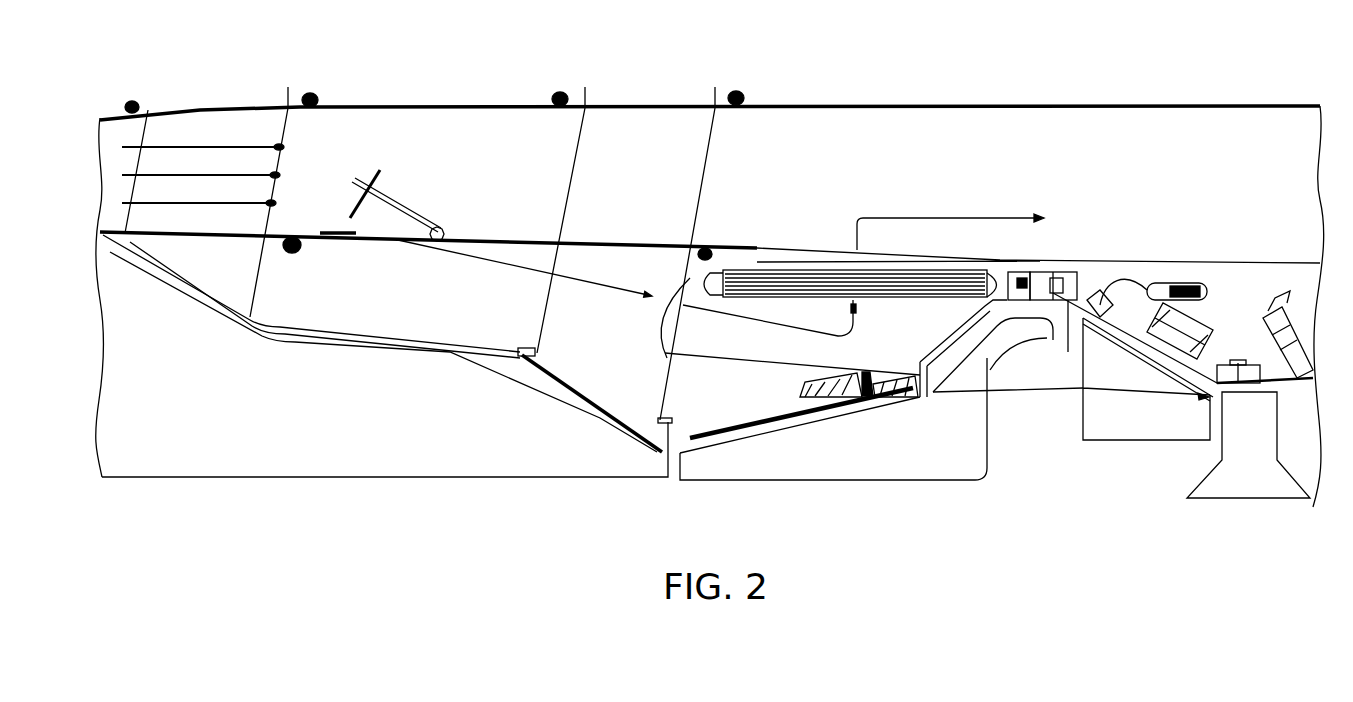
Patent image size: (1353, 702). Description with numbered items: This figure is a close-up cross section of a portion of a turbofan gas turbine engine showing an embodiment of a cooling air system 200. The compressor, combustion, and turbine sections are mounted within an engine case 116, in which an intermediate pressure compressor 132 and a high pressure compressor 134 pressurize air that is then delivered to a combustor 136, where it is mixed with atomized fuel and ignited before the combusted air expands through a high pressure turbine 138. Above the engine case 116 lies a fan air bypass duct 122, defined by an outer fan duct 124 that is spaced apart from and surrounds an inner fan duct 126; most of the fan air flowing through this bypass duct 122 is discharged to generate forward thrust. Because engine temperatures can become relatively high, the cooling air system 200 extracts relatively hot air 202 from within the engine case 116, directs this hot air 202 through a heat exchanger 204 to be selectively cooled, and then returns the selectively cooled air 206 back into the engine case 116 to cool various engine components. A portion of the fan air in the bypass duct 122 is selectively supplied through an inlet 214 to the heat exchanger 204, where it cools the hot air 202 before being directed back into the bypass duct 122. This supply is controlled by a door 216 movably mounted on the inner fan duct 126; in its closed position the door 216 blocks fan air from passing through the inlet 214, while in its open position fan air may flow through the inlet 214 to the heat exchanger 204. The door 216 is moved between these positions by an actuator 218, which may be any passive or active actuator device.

The engine case 116 is at (602, 404).
The fan air bypass duct 122 is at (460, 158).
The outer fan duct 124 is at (894, 107).
The inner fan duct 126 is at (593, 240).
The intermediate pressure compressor 132 is at (383, 478).
The high pressure compressor 134 is at (836, 481).
The combustor 136 is at (1148, 438).
The high pressure turbine 138 is at (1250, 499).
The cooling air system 200 is at (814, 233).
The relatively hot air 202 is at (1058, 273).
The heat exchanger 204 is at (758, 248).
The selectively cooled air 206 is at (748, 364).
The inlet 214 is at (501, 233).
The door 216 is at (338, 232).
The actuator 218 is at (442, 226).